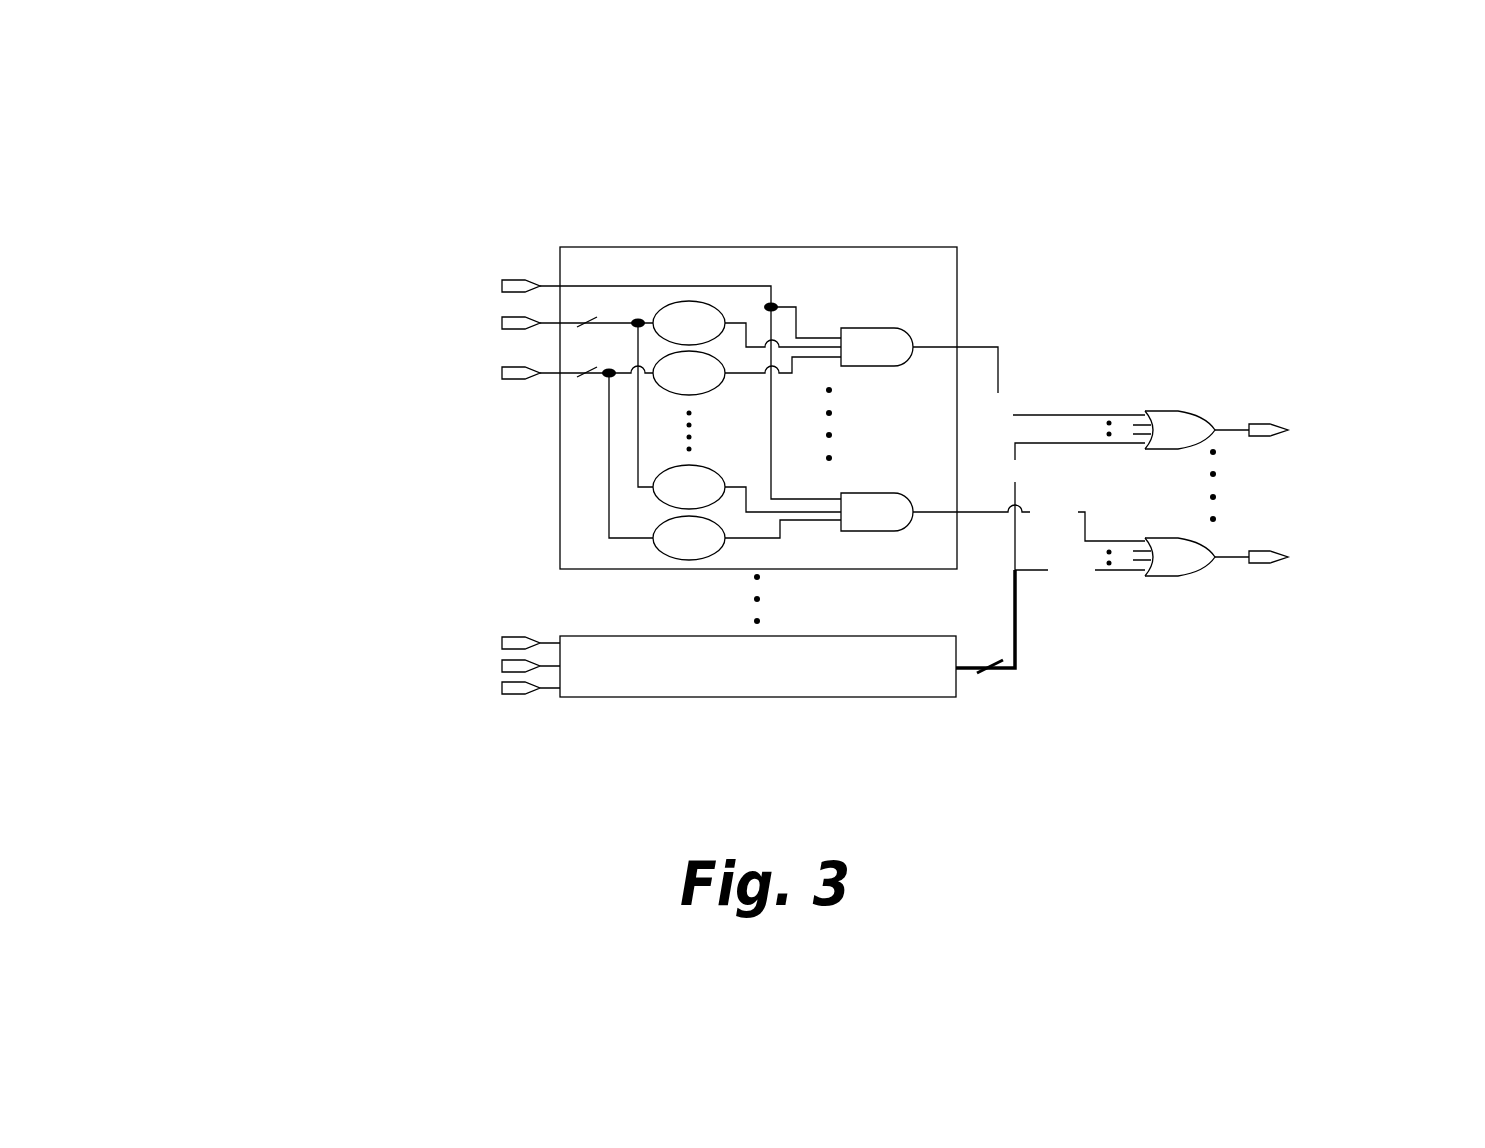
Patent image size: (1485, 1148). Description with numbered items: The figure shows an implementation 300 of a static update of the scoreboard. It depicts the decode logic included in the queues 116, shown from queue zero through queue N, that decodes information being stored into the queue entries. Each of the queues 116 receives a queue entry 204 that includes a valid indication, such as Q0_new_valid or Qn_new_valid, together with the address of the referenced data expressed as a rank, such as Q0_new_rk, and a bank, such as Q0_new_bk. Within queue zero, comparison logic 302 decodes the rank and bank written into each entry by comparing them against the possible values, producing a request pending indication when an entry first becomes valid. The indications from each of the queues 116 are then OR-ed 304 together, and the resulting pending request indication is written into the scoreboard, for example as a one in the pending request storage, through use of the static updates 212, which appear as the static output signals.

The static detection circuit 300 is at (243, 148).
The queues 116 is at (647, 215).
The queue 0 comparison logic 302 is at (857, 247).
The queue entry 204 is at (335, 258).
The OR-ed 304 is at (1082, 320).
The static updates 212 is at (1365, 387).